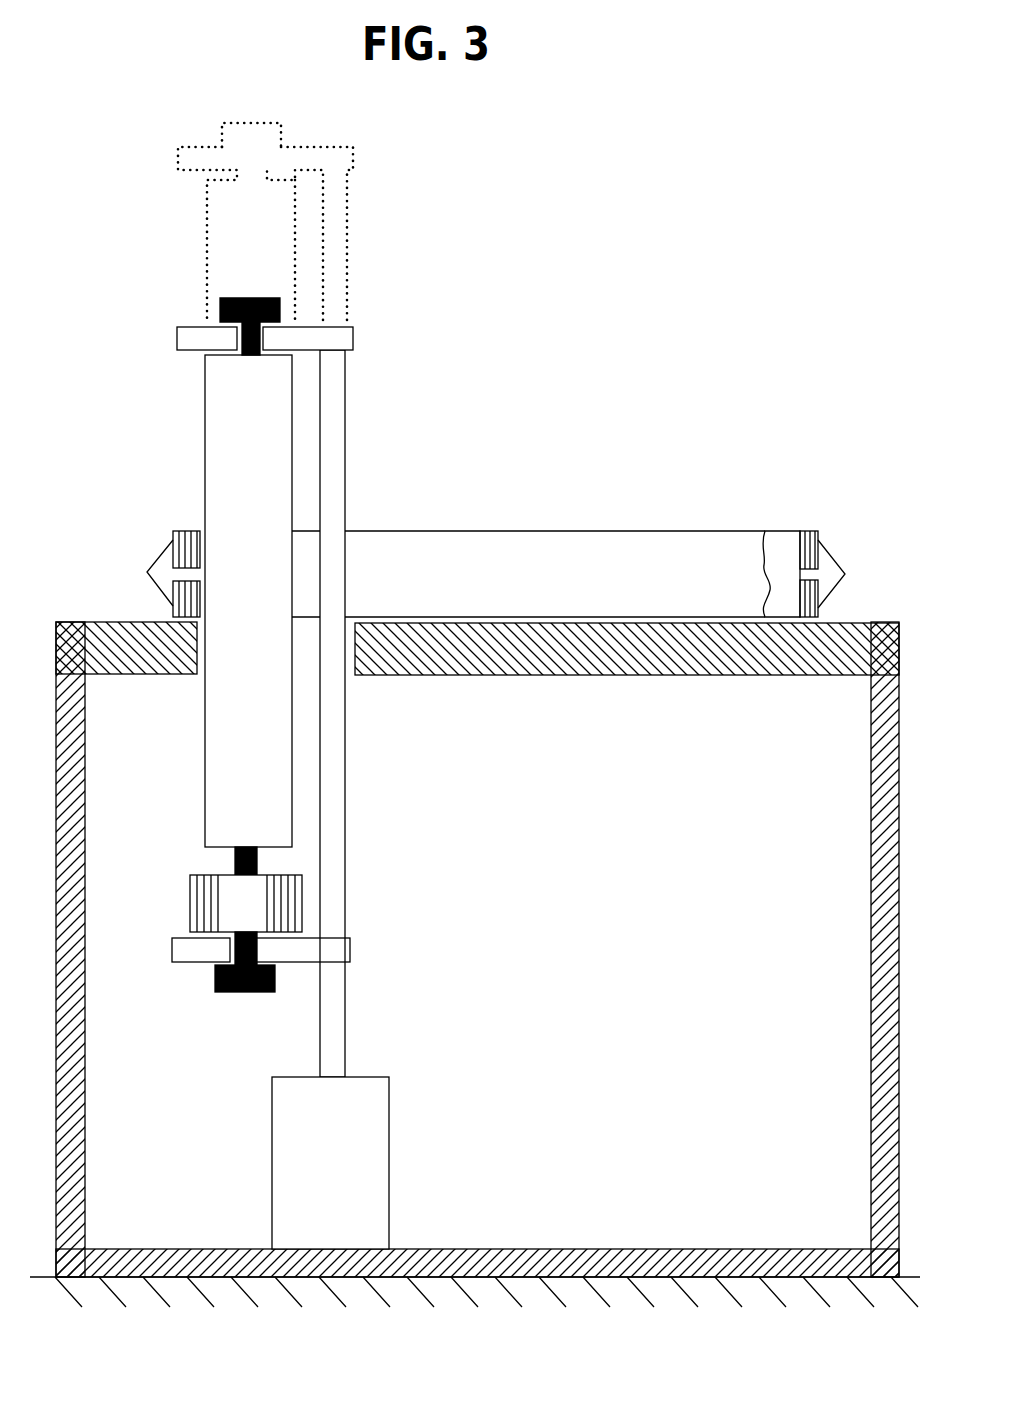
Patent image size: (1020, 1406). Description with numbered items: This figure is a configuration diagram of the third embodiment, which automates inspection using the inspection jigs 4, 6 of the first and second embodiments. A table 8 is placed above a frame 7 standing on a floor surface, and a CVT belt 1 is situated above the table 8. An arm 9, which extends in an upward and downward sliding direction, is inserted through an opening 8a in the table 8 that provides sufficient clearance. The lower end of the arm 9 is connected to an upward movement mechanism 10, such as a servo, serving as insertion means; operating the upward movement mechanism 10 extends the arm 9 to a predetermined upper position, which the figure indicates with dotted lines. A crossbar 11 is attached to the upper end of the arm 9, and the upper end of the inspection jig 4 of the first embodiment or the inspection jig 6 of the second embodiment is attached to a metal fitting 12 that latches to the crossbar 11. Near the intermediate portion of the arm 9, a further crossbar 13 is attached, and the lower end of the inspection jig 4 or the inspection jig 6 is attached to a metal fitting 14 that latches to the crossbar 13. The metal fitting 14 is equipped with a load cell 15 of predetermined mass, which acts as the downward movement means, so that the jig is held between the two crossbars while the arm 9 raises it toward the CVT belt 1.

The CVT belt 1 is at (657, 497).
The inspection jig 4 is at (196, 601).
The inspection jig 6 is at (197, 442).
The frame 7 is at (693, 1249).
The table 8 is at (481, 655).
The opening 8a is at (355, 672).
The arm 9 is at (345, 858).
The upward movement mechanism 10 is at (389, 1180).
The crossbar 11 is at (307, 327).
The metal fitting 12 is at (235, 298).
The crossbar 13 is at (187, 963).
The metal fitting 14 is at (245, 992).
The load cell 15 is at (190, 895).